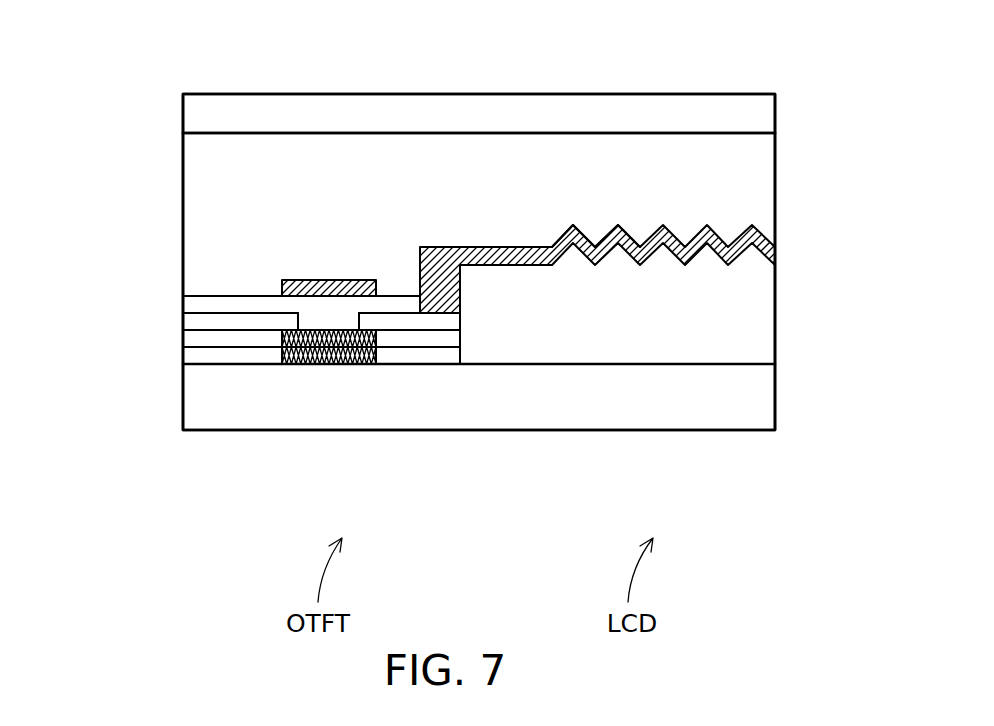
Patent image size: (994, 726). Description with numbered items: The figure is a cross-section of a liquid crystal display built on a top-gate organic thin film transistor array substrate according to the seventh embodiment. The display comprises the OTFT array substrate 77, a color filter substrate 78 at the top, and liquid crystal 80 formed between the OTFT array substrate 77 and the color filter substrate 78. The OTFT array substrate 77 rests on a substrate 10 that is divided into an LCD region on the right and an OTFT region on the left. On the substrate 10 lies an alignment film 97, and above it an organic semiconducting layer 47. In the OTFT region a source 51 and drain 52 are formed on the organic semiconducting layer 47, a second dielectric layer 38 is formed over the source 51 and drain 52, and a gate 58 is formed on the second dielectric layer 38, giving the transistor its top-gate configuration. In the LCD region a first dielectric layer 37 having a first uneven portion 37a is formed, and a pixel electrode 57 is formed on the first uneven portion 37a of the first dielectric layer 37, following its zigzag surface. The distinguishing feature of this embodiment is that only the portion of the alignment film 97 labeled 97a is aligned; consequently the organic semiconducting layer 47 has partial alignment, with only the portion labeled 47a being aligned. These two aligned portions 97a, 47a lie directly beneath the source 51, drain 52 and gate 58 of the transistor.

The substrate 10 is at (763, 397).
The first dielectric layer 37 is at (763, 338).
The first uneven portion 37a is at (678, 242).
The second dielectric layer 38 is at (183, 302).
The organic semiconducting layer 47 is at (183, 338).
The aligned portion of organic semiconducting layer 47a is at (353, 364).
The source 51 is at (183, 320).
The drain 52 is at (426, 320).
The pixel electrode 57 is at (603, 247).
The gate 58 is at (282, 288).
The OTFT array substrate 77 is at (72, 232).
The color filter substrate 78 is at (763, 117).
The liquid crystal 80 is at (763, 152).
The alignment film 97 is at (183, 355).
The aligned portion of alignment film 97a is at (302, 364).